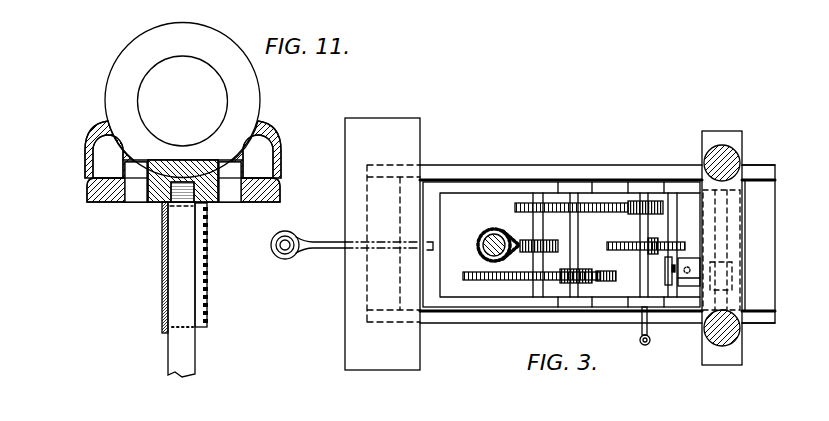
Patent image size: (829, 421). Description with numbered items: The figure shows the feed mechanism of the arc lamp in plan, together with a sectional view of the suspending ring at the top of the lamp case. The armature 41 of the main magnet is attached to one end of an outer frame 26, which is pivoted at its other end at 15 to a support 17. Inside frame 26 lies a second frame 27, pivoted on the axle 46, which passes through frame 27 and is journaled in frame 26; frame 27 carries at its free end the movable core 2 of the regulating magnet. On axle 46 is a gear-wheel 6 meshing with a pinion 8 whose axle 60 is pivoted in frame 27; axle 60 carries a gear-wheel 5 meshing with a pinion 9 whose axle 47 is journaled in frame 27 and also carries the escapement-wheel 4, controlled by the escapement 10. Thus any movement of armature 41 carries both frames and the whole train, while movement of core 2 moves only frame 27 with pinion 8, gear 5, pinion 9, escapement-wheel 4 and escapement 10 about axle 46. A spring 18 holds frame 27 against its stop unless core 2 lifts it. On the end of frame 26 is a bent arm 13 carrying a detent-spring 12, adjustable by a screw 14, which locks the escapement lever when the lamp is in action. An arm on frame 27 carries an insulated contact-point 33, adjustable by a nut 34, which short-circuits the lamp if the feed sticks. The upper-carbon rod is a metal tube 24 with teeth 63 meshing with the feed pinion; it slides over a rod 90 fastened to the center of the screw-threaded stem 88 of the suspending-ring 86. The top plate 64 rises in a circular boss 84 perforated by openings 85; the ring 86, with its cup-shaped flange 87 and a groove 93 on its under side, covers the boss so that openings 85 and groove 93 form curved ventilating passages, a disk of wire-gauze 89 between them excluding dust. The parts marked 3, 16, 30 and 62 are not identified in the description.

In FIG. 3, the movable core 2 is at (740, 158).
In FIG. 3, the gear 3 is at (629, 238).
In FIG. 3, the escapement-wheel 4 is at (628, 250).
In FIG. 3, the gear-wheel 5 is at (563, 211).
In FIG. 3, the gear-wheel 6 is at (477, 272).
In FIG. 3, the pinion 8 is at (581, 271).
In FIG. 3, the pinion 9 is at (632, 213).
In FIG. 3, the escapement 10 is at (656, 241).
In FIG. 3, the detent-spring 12 is at (691, 258).
In FIG. 3, the bent arm 13 is at (690, 278).
In FIG. 3, the screw 14 is at (690, 270).
In FIG. 3, the pivot 15 is at (727, 247).
In FIG. 3, the guide 16 is at (733, 283).
In FIG. 3, the support 17 is at (742, 143).
In FIG. 3, the spring 18 is at (649, 332).
In FIG. 11, the metal tube 24 is at (162, 276).
In FIG. 3, the metal tube 24 is at (490, 232).
In FIG. 3, the frame 26 is at (447, 172).
In FIG. 3, the frame 27 is at (468, 186).
In FIG. 3, the rod 30 is at (313, 240).
In FIG. 3, the insulated contact-point 33 is at (283, 249).
In FIG. 3, the nut 34 is at (288, 253).
In FIG. 3, the armature 41 is at (382, 244).
In FIG. 3, the axle 46 is at (533, 228).
In FIG. 3, the axle 47 is at (640, 270).
In FIG. 3, the axle 60 is at (578, 234).
In FIG. 3, the shaft 62 is at (678, 221).
In FIG. 11, the teeth 63 is at (208, 251).
In FIG. 11, the top plate 64 is at (270, 185).
In FIG. 11, the circular boss 84 is at (183, 182).
In FIG. 11, the openings 85 is at (135, 200).
In FIG. 11, the suspending-ring 86 is at (230, 105).
In FIG. 11, the cup-shaped flange 87 is at (272, 158).
In FIG. 11, the screw-threaded stem 88 is at (183, 181).
In FIG. 11, the wire-gauze 89 is at (128, 153).
In FIG. 11, the rod 90 is at (181, 279).
In FIG. 3, the rod 90 is at (480, 252).
In FIG. 11, the groove 93 is at (183, 156).